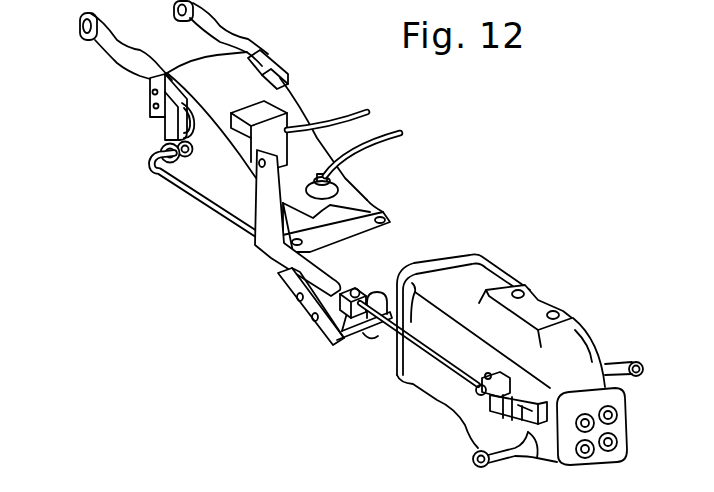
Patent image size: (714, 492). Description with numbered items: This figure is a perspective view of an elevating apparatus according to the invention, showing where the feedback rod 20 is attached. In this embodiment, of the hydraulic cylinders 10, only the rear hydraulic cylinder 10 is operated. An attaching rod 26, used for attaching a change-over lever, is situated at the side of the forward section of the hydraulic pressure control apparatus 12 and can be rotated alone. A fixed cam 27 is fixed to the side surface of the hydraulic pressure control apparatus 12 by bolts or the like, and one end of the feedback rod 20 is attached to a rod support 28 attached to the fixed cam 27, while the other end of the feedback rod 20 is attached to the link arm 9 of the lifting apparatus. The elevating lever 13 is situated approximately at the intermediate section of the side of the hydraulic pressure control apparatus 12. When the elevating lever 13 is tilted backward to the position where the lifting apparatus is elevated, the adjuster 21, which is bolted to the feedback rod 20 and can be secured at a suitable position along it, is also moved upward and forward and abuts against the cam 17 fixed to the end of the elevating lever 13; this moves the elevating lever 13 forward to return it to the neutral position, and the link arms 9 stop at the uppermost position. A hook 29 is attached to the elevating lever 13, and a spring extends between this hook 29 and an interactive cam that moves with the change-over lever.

The link arm 9 is at (140, 77).
The hydraulic cylinder 10 is at (258, 82).
The hydraulic pressure control apparatus 12 is at (467, 291).
The elevating lever 13 is at (266, 224).
The cam 17 is at (384, 290).
The feedback rod 20 is at (188, 195).
The adjuster 21 is at (355, 289).
The attaching rod 26 is at (487, 409).
The fixed cam 27 is at (510, 393).
The rod support 28 is at (500, 380).
The hook 29 is at (317, 327).